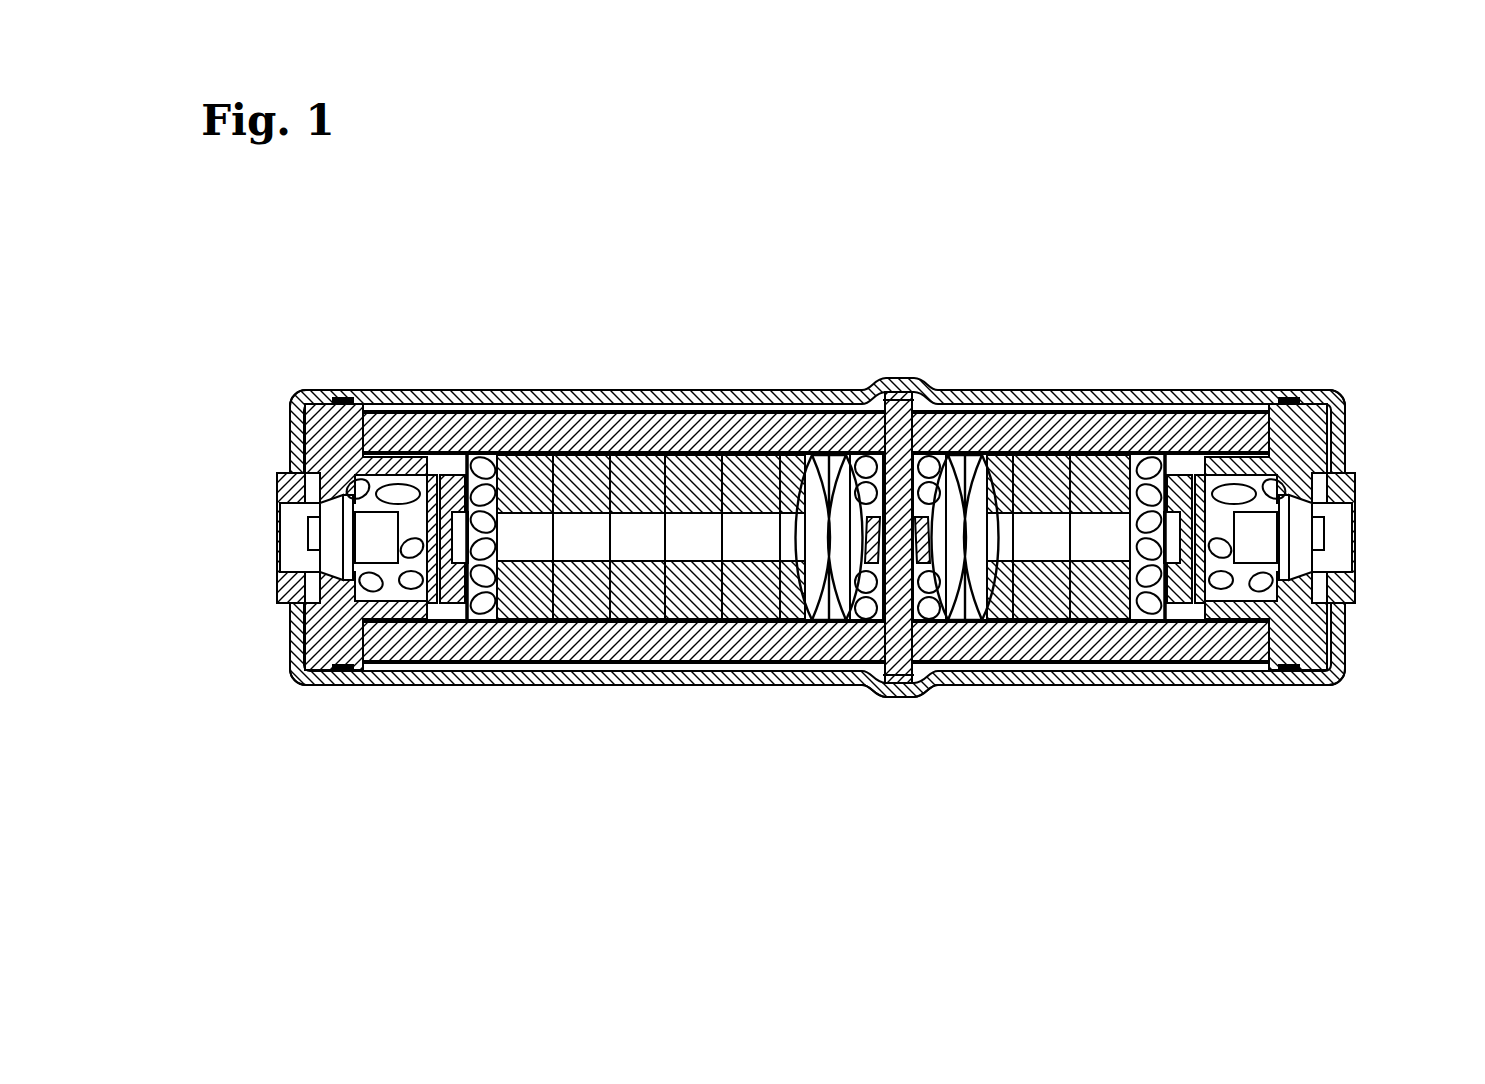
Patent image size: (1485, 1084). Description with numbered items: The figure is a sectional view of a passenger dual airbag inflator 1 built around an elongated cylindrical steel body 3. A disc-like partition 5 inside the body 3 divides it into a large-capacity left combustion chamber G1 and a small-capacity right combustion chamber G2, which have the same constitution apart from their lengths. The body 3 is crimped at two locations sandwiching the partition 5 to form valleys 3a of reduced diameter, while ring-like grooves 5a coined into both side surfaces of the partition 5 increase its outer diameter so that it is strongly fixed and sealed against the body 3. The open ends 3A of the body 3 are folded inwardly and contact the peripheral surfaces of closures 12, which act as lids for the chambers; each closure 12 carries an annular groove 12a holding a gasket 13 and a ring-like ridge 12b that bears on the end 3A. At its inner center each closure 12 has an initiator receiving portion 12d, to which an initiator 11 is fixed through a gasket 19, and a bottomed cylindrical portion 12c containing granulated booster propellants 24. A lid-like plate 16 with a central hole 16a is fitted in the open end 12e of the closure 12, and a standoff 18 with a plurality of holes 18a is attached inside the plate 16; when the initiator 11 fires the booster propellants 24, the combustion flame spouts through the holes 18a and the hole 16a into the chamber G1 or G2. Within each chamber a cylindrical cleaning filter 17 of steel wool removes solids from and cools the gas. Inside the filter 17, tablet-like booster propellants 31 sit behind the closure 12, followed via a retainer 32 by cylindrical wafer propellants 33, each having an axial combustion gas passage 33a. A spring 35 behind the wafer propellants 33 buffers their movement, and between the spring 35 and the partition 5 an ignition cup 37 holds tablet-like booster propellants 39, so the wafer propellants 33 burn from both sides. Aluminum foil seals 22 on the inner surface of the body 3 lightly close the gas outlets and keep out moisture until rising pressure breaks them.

The inflator 1 is at (1250, 189).
The body 3 is at (1180, 413).
The open ends 3A is at (310, 405).
The valleys 3a is at (898, 697).
The partition 5 is at (898, 392).
The ring-like grooves 5a is at (884, 440).
The initiator 11 is at (285, 500).
The closure 12 is at (300, 432).
The annular groove 12a is at (300, 392).
The ridge 12b is at (300, 672).
The cylindrical portion 12c is at (362, 672).
The initiator receiving portion 12d is at (300, 600).
The open end 12e is at (1195, 622).
The gasket 13 is at (345, 398).
The plate 16 is at (412, 592).
The hole 16a is at (486, 612).
The cleaning filter 17 is at (750, 622).
The standoff 18 is at (432, 605).
The holes 18a is at (466, 475).
The gasket 19 is at (290, 540).
The seals 22 is at (632, 412).
The booster propellants 24 is at (395, 456).
The booster propellants 31 is at (535, 454).
The retainer 32 is at (640, 545).
The wafer propellants 33 is at (780, 622).
The combustion gas passage 33a is at (705, 622).
The spring 35 is at (866, 623).
The ignition cup 37 is at (866, 520).
The booster propellants 39 is at (820, 458).
The left combustion chamber G1 is at (665, 405).
The right combustion chamber G2 is at (1100, 405).